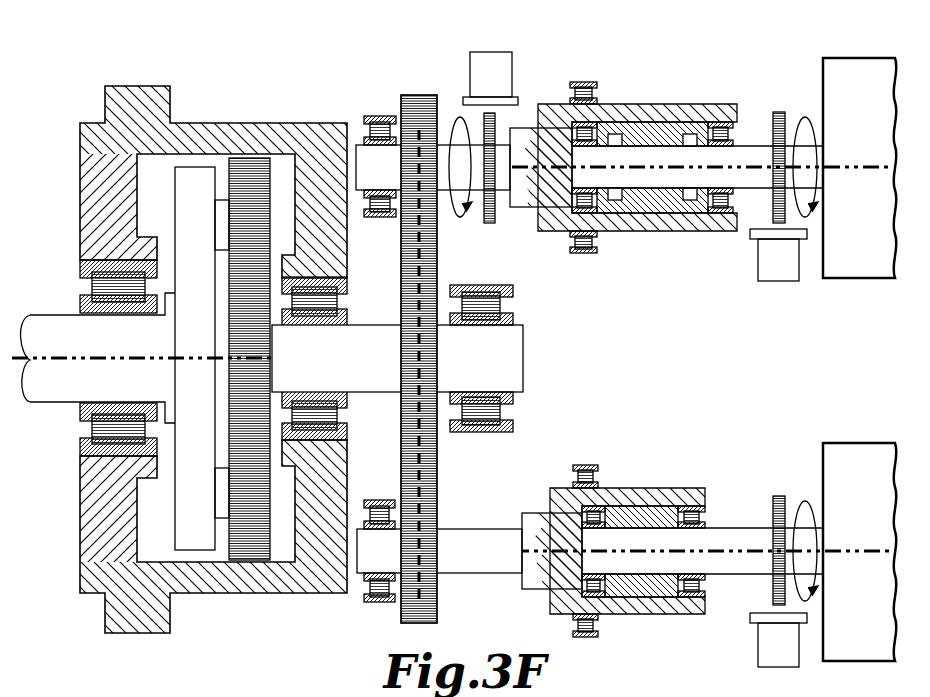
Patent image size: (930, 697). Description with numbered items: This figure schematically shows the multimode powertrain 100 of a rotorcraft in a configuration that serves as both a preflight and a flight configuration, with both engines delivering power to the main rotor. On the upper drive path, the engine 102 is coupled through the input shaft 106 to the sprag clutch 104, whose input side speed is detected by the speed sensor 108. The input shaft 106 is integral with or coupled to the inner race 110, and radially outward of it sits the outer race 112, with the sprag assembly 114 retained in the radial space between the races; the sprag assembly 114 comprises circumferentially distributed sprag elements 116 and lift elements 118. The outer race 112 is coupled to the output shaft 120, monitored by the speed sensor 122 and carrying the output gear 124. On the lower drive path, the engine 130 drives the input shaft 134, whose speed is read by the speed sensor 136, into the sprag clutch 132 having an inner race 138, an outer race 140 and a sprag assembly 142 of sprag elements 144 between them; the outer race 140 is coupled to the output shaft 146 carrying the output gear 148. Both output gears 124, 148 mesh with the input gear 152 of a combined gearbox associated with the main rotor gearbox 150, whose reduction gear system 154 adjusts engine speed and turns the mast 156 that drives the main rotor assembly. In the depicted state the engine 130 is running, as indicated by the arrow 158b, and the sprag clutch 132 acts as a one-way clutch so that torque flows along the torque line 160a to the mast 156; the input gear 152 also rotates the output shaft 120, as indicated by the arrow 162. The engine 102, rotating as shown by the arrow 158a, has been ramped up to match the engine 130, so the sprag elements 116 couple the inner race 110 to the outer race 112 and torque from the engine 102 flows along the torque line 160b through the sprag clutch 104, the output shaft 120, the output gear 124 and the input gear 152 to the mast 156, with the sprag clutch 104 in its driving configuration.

The multimode powertrain 100 is at (323, 85).
The engine 102 is at (859, 168).
The sprag clutch 104 is at (623, 166).
The input shaft 106 is at (750, 157).
The speed sensor 108 is at (780, 285).
The inner race 110 is at (662, 157).
The outer race 112 is at (622, 106).
The sprag assembly 114 is at (676, 214).
The sprag elements 116 is at (655, 215).
The lift elements 118 is at (600, 215).
The output shaft 120 is at (492, 190).
The speed sensor 122 is at (500, 62).
The output gear 124 is at (418, 105).
The engine 130 is at (859, 552).
The sprag clutch 132 is at (613, 544).
The input shaft 134 is at (740, 538).
The speed sensor 136 is at (762, 657).
The inner race 138 is at (650, 538).
The outer race 140 is at (610, 488).
The sprag assembly 142 is at (658, 596).
The sprag elements 144 is at (625, 600).
The output shaft 146 is at (480, 565).
The output gear 148 is at (405, 612).
The main rotor gearbox 150 is at (202, 125).
The input gear 152 is at (432, 455).
The reduction gear system 154 is at (248, 176).
The mast 156 is at (48, 395).
The arrow 158a is at (805, 118).
The arrow 158b is at (805, 500).
The torque line 160b is at (872, 165).
The torque line 160a is at (872, 549).
The arrow 162 is at (460, 118).